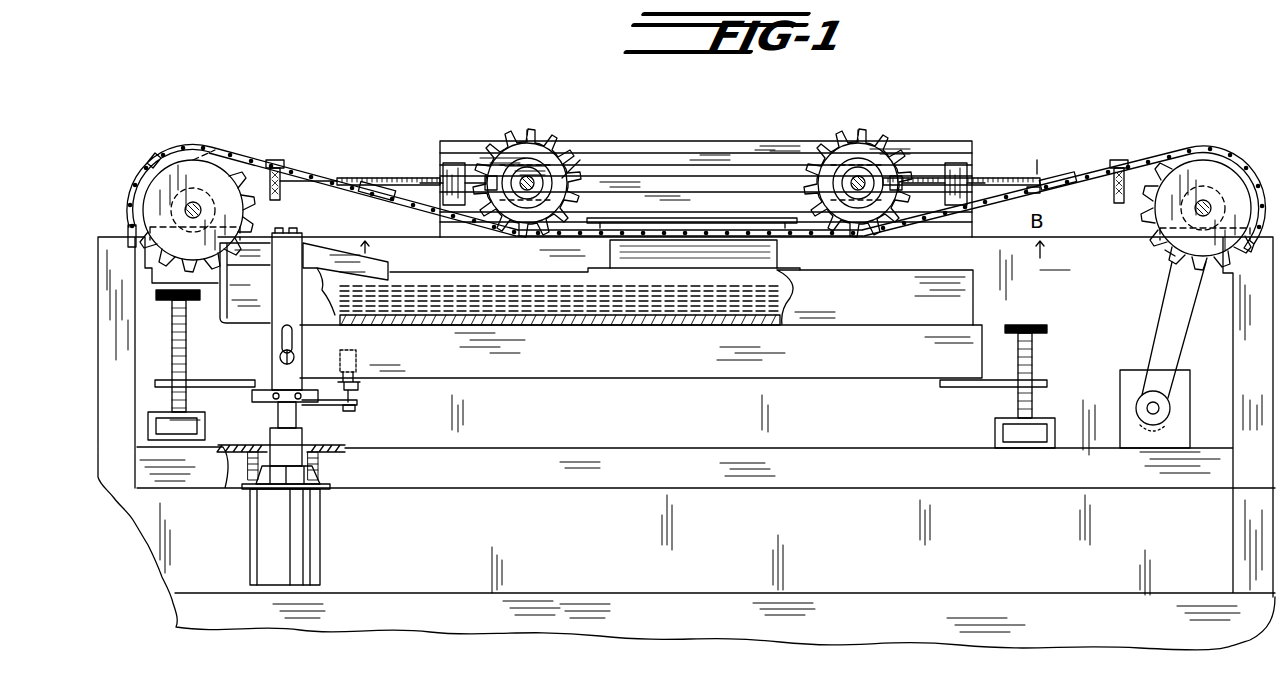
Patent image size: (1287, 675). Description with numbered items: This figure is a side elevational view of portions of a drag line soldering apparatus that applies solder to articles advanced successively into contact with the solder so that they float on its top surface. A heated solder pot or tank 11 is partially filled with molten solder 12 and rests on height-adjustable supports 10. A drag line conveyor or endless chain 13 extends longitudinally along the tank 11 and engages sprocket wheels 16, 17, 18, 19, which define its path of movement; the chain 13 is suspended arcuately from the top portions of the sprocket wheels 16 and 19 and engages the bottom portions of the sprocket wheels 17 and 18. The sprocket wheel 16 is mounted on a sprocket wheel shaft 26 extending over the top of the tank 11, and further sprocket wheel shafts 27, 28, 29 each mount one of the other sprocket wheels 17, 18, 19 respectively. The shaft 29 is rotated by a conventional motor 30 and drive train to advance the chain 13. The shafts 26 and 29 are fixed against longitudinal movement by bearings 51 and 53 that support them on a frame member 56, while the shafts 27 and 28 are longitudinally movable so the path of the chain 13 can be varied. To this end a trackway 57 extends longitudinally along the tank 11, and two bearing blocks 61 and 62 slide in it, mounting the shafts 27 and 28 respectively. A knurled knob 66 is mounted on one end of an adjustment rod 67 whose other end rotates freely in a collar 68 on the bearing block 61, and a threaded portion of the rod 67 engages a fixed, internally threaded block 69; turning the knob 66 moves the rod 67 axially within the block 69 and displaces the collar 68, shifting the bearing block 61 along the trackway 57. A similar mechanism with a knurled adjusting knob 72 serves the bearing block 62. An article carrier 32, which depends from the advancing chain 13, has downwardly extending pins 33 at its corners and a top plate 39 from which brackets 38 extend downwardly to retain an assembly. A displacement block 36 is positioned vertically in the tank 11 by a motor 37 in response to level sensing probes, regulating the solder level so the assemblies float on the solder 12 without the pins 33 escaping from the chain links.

The height-adjustable supports 10 is at (207, 380).
The solder pot or tank 11 is at (430, 322).
The molten solder 12 is at (578, 300).
The drag line conveyor or endless chain 13 is at (318, 180).
The sprocket wheel 16 is at (258, 224).
The sprocket wheel 17 is at (582, 160).
The sprocket wheel 18 is at (825, 150).
The sprocket wheel 19 is at (1167, 330).
The sprocket wheel shaft 26 is at (190, 208).
The sprocket wheel shaft 27 is at (528, 181).
The sprocket wheel shaft 28 is at (857, 181).
The sprocket wheel shaft 29 is at (1188, 226).
The motor 30 is at (1182, 398).
The article carrier 32 is at (790, 290).
The pins 33 is at (590, 236).
The displacement block 36 is at (385, 258).
The motor 37 is at (258, 535).
The brackets 38 is at (628, 265).
The top plate 39 is at (704, 216).
The bearing 51 is at (222, 160).
The bearing 53 is at (1160, 252).
The frame member 56 is at (108, 240).
The trackway 57 is at (692, 170).
The bearing block 61 is at (560, 142).
The bearing block 62 is at (880, 143).
The knurled knob 66 is at (279, 164).
The adjustment rod 67 is at (390, 178).
The collar 68 is at (496, 174).
The internally threaded block 69 is at (452, 163).
The knurled adjusting knob 72 is at (1115, 198).